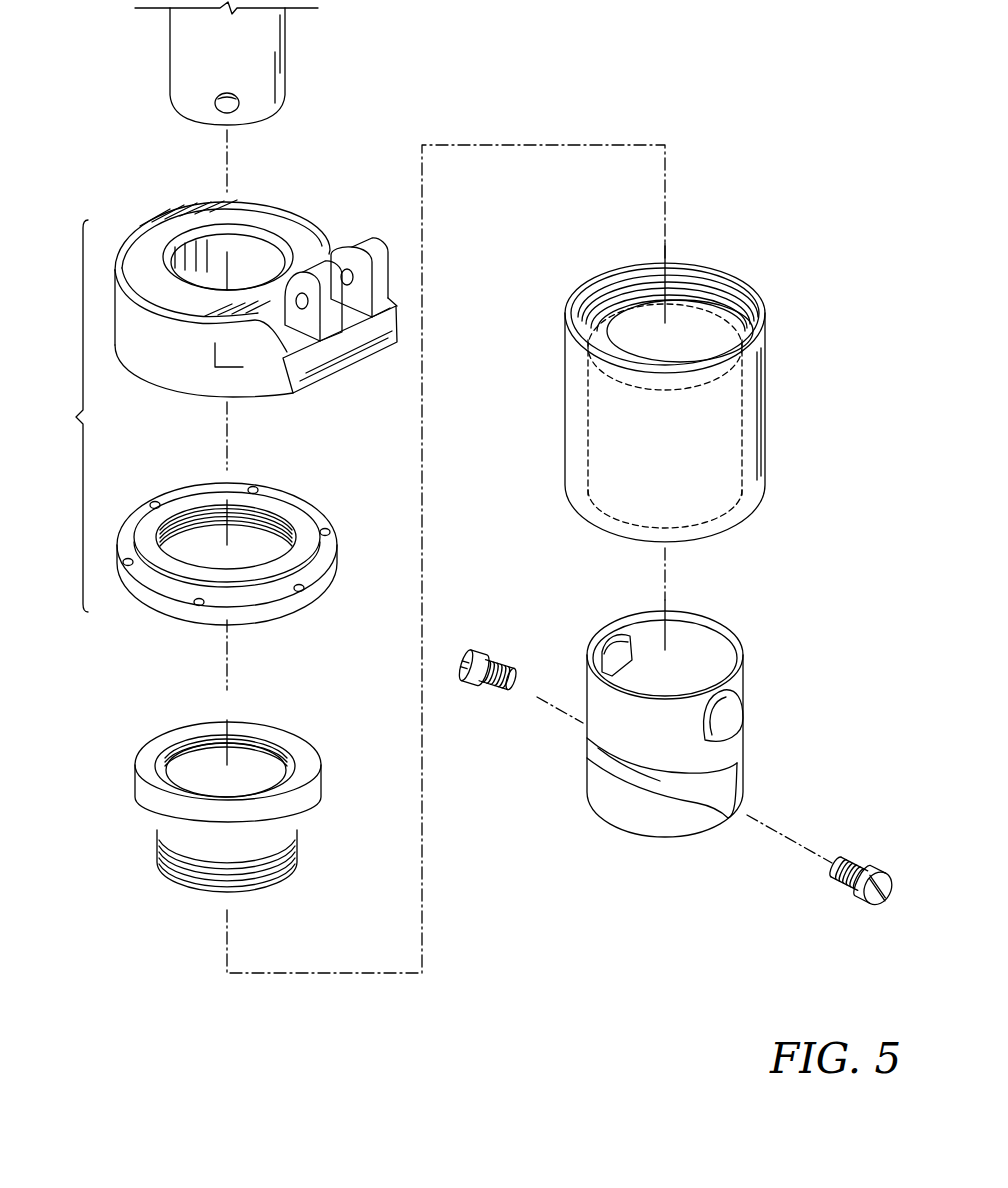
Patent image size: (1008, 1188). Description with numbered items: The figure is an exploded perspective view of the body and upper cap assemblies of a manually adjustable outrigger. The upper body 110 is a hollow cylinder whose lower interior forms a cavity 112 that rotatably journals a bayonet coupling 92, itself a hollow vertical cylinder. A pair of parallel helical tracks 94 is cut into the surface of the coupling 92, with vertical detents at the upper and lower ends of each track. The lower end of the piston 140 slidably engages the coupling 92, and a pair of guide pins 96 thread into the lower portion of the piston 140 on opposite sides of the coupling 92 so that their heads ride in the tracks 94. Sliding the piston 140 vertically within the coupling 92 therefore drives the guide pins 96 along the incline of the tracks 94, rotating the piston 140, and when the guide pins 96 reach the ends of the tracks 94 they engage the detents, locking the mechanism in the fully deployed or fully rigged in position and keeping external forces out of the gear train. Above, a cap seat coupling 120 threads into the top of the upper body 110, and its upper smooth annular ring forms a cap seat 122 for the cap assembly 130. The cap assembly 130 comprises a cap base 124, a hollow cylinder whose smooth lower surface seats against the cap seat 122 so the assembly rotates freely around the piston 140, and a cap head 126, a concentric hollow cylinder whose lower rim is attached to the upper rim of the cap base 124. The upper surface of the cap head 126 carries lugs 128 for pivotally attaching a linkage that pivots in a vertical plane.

The bayonet coupling 92 is at (743, 740).
The helical tracks 94 is at (640, 773).
The guide pins 96 is at (502, 660).
The upper body 110 is at (763, 407).
The cavity 112 is at (585, 433).
The cap seat coupling 120 is at (158, 848).
The cap seat 122 is at (292, 737).
The cap base 124 is at (292, 498).
The cap head 126 is at (163, 378).
The lugs 128 is at (372, 245).
The cap assembly 130 is at (60, 416).
The piston 140 is at (172, 50).